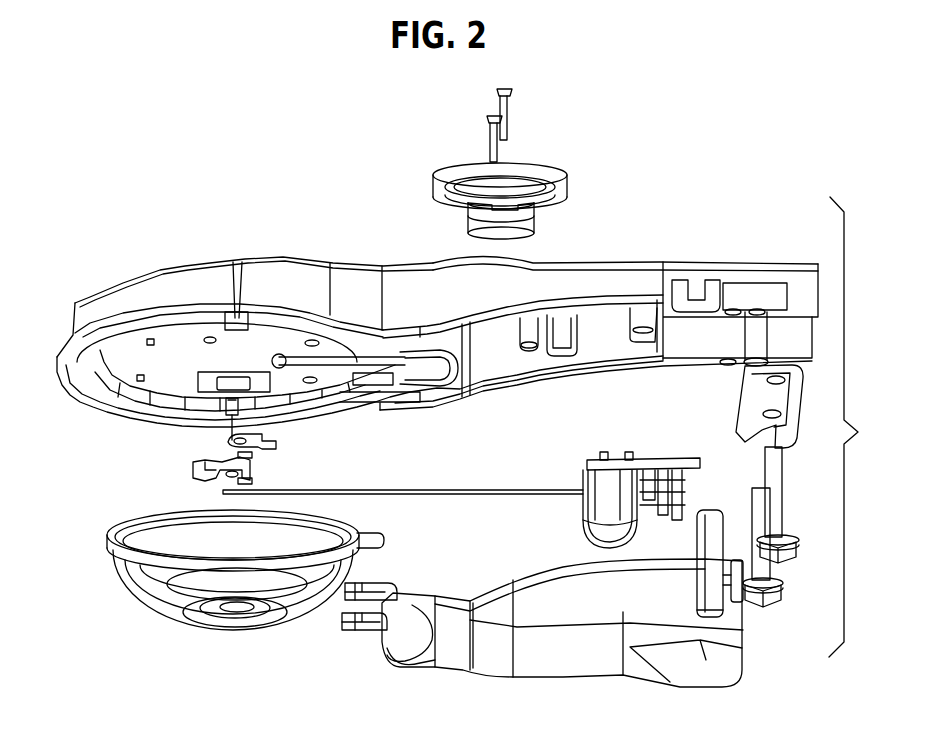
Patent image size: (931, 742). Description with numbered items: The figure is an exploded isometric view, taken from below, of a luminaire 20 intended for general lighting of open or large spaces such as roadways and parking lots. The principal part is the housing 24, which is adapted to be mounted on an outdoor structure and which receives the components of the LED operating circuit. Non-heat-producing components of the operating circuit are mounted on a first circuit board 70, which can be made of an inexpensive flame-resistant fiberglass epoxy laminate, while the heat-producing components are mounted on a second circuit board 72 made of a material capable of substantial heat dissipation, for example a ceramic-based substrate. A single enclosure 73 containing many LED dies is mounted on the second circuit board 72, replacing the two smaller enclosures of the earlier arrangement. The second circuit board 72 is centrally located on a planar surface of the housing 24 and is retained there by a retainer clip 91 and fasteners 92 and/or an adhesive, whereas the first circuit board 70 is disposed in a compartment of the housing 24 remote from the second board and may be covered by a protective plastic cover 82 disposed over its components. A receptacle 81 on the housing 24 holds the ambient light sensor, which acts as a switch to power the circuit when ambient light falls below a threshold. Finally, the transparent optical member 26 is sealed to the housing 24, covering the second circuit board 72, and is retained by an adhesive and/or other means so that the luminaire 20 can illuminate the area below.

The luminaire 20 is at (180, 204).
The housing 24 is at (622, 272).
The transparent optical member 26 is at (168, 620).
The first circuit board 70 is at (648, 462).
The second circuit board 72 is at (208, 474).
The enclosure 73 is at (220, 387).
The receptacle 81 is at (458, 168).
The protective plastic cover 82 is at (590, 540).
The retainer clip 91 is at (265, 433).
The fasteners 92 is at (588, 340).